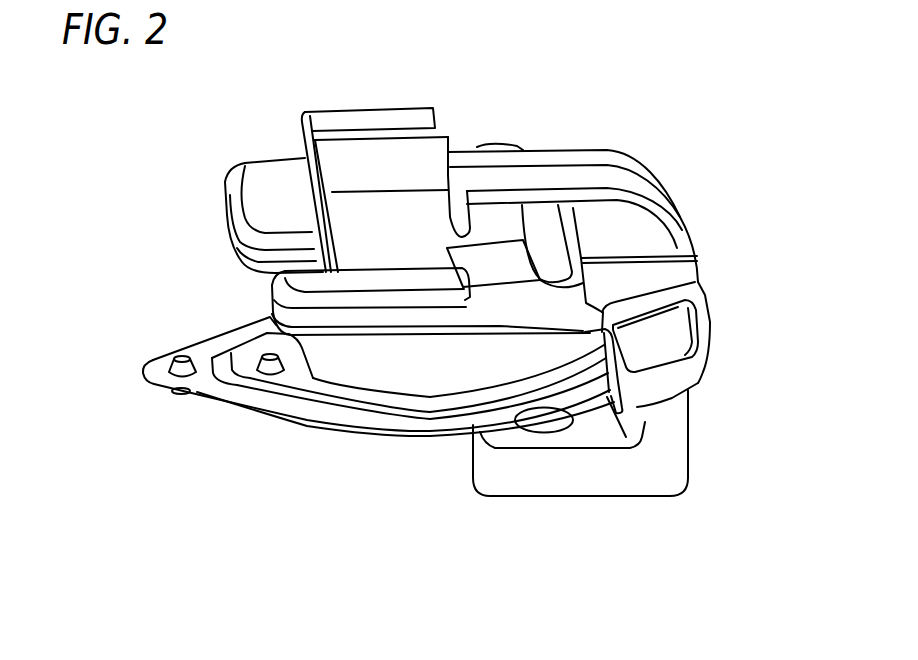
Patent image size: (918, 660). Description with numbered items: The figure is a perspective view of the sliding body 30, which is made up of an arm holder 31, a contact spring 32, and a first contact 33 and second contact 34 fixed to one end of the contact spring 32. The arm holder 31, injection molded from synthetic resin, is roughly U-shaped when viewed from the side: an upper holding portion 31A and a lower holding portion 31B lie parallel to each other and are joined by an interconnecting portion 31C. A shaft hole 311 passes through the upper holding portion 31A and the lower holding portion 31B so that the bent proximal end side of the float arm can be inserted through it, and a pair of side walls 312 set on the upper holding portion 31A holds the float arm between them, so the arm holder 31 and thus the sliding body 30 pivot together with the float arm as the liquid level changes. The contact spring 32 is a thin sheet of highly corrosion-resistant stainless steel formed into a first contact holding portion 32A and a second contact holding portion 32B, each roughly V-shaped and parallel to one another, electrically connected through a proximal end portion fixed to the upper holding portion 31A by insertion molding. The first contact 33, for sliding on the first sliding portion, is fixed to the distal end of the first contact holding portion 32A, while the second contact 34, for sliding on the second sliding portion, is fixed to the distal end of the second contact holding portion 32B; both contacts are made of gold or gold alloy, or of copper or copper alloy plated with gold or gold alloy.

The sliding body 30 is at (656, 128).
The arm holder 31 is at (702, 230).
The upper holding portion 31A is at (257, 180).
The lower holding portion 31B is at (598, 485).
The interconnecting portion 31C is at (680, 417).
The shaft hole 311 is at (543, 425).
The pair of side walls 312 is at (583, 217).
The contact spring 32 is at (364, 514).
The first contact holding portion 32A is at (267, 397).
The second contact holding portion 32B is at (298, 377).
The first contact 33 is at (182, 359).
The second contact 34 is at (270, 357).